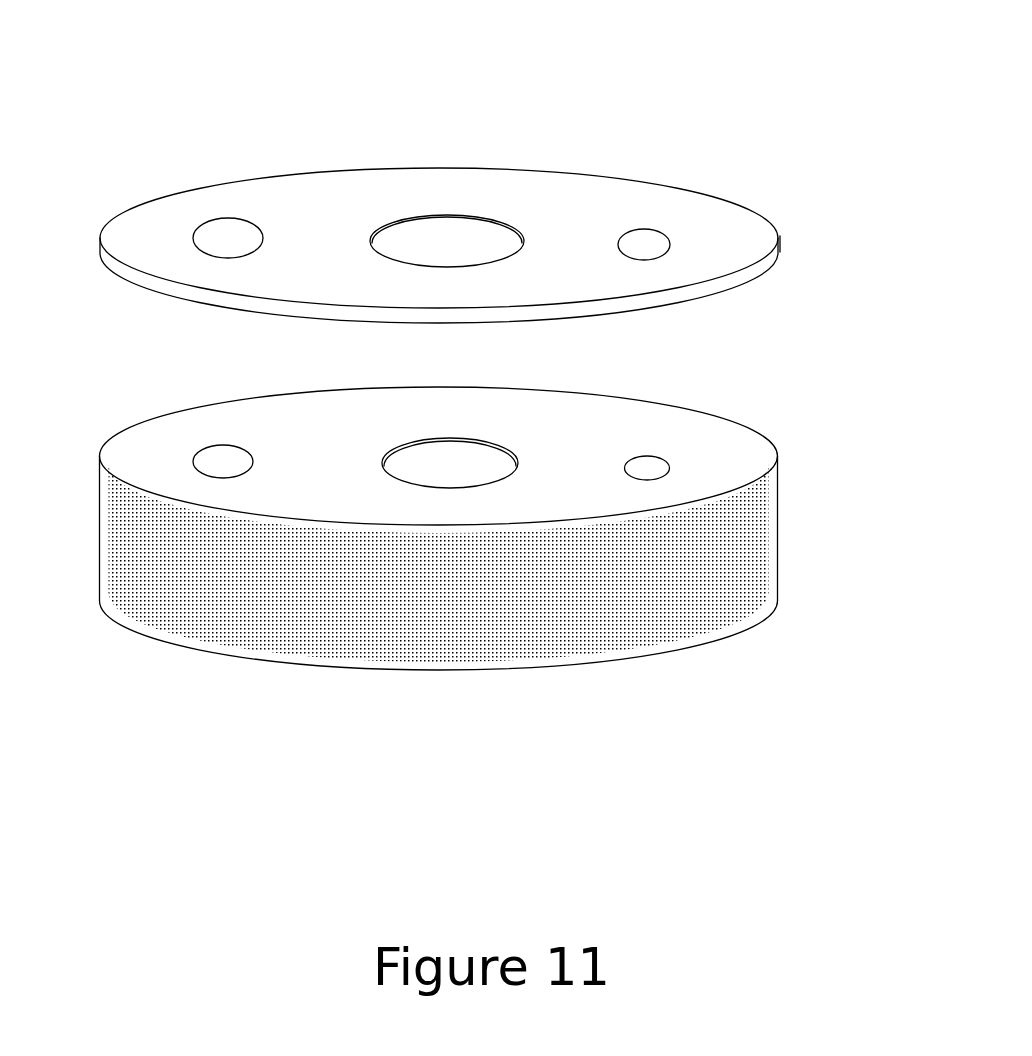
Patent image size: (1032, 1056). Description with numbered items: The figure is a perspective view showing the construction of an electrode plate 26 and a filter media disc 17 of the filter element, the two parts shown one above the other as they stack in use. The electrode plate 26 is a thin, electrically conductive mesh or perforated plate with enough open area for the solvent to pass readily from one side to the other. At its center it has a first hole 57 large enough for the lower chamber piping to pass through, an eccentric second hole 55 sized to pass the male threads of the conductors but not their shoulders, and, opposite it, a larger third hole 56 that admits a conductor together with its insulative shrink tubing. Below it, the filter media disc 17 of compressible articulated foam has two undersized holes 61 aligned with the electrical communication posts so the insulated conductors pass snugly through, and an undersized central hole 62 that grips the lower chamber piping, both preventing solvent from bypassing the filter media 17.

The filter media disc 17 is at (648, 600).
The electrode plate 26 is at (570, 228).
The second hole 55 is at (648, 243).
The third hole 56 is at (228, 235).
The first hole 57 is at (457, 243).
The undersized holes 61 is at (233, 460).
The central hole 62 is at (440, 463).